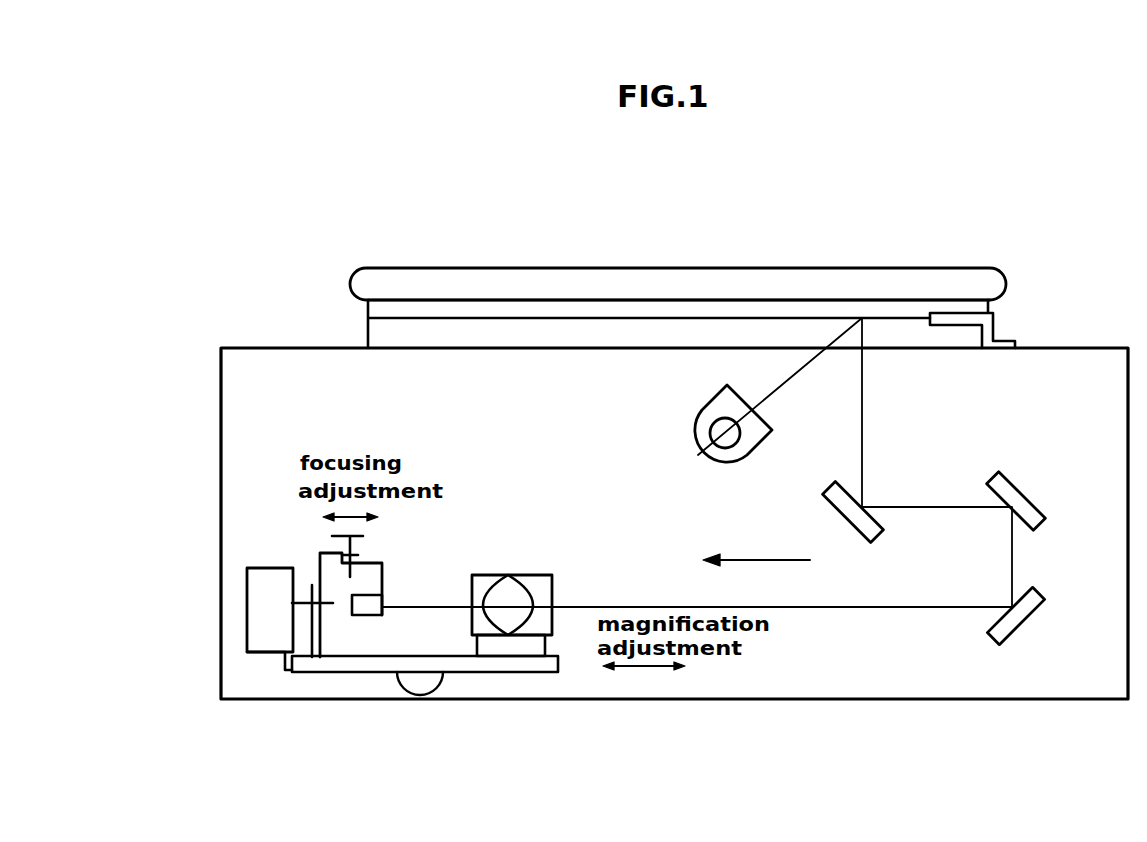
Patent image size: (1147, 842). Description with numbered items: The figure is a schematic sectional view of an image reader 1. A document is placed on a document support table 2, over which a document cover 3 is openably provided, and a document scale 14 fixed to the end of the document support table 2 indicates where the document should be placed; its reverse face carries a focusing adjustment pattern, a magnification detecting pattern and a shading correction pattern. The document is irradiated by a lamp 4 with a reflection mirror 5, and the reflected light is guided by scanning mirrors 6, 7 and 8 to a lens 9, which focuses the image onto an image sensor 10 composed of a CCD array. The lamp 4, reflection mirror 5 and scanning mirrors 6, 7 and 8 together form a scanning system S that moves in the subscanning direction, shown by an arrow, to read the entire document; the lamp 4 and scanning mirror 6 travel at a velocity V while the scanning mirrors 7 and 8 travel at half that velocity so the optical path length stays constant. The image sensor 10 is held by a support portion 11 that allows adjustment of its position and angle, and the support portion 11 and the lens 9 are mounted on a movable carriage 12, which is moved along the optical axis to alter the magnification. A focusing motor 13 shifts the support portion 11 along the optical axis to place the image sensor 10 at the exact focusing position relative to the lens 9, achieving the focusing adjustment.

The image reader 1 is at (926, 238).
The document support table 2 is at (366, 336).
The document cover 3 is at (470, 308).
The lamp 4 is at (699, 454).
The reflection mirror 5 is at (703, 406).
The scanning mirror 6 is at (828, 502).
The scanning mirror 7 is at (998, 472).
The scanning mirror 8 is at (1030, 619).
The lens 9 is at (513, 625).
The image sensor 10 is at (362, 616).
The support portion 11 is at (387, 580).
The movable carriage 12 is at (393, 667).
The focusing motor 13 is at (245, 657).
The document scale 14 is at (1015, 342).
The scanning system S is at (930, 457).